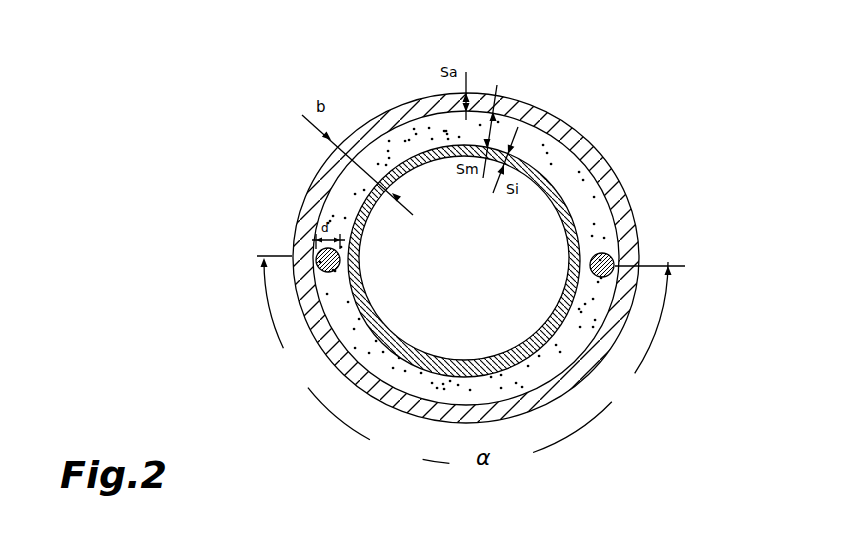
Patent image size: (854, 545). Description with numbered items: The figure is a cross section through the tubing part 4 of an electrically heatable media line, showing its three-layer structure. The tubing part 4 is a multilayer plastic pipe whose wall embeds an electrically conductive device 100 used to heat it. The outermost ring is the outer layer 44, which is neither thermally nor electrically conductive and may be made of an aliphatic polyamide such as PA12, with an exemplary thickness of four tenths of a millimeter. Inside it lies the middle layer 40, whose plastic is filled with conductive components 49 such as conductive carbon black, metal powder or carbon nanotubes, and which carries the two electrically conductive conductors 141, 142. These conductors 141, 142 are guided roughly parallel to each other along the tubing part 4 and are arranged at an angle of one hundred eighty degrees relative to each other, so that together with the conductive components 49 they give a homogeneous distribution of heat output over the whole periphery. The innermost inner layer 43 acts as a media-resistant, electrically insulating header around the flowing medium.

The tubing part 4 is at (471, 220).
The middle layer 40 is at (498, 199).
The inner layer 43 is at (560, 158).
The outer layer 44 is at (513, 112).
The conductive components 49 is at (340, 187).
The electrically conductive device 100 is at (603, 168).
The conductor 141 is at (318, 254).
The conductor 142 is at (612, 262).